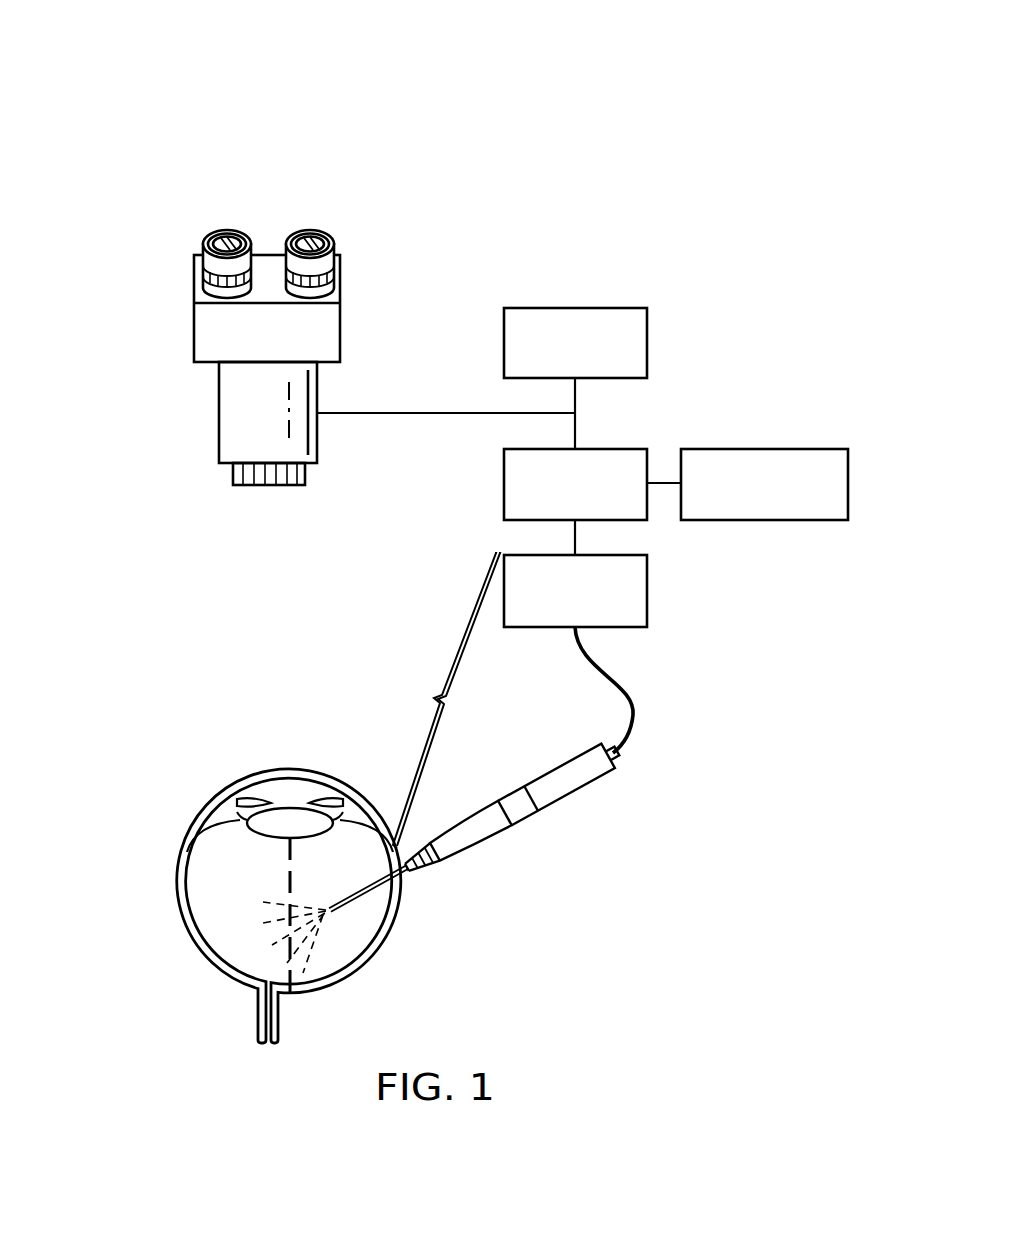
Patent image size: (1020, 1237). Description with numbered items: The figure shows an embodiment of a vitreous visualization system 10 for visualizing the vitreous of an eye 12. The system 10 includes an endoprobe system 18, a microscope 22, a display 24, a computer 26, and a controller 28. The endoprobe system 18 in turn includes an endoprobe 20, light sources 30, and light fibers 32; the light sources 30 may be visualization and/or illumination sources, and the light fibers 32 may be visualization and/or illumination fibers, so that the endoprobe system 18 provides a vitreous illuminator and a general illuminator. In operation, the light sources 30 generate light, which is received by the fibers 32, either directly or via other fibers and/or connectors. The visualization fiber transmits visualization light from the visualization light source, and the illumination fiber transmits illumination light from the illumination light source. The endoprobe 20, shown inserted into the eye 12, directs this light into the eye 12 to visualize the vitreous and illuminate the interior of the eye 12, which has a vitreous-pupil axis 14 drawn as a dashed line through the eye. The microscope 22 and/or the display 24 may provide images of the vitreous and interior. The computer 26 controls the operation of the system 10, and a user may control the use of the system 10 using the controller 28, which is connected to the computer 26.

The vitreous visualization system 10 is at (581, 189).
The eye 12 is at (178, 909).
The vitreous-pupil axis 14 is at (288, 883).
The endoprobe system 18 is at (391, 700).
The endoprobe 20 is at (536, 822).
The microscope 22 is at (219, 429).
The display 24 is at (647, 345).
The computer 26 is at (504, 472).
The light sources 28 is at (848, 472).
The light sources 30 is at (647, 590).
The light fibers 32 is at (633, 716).